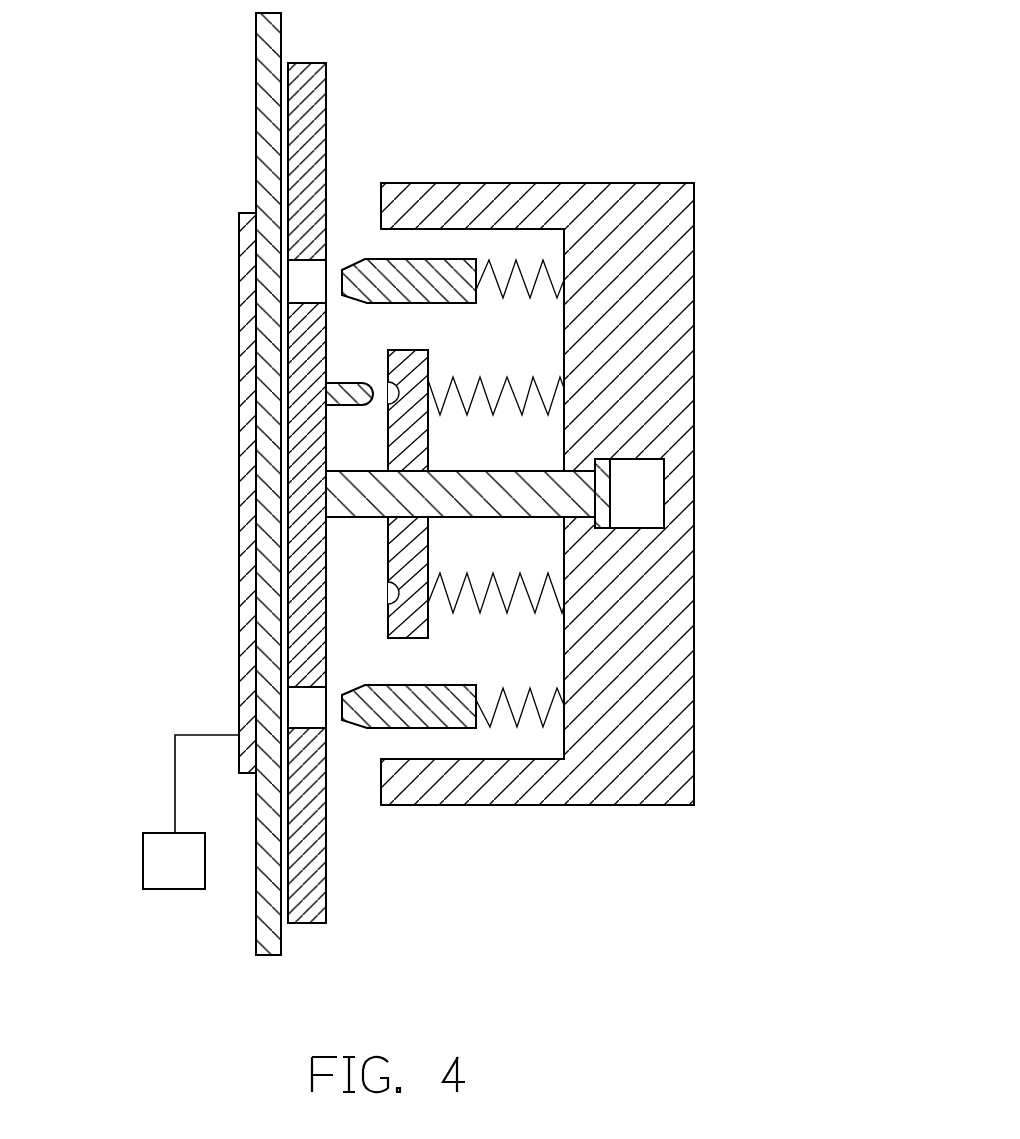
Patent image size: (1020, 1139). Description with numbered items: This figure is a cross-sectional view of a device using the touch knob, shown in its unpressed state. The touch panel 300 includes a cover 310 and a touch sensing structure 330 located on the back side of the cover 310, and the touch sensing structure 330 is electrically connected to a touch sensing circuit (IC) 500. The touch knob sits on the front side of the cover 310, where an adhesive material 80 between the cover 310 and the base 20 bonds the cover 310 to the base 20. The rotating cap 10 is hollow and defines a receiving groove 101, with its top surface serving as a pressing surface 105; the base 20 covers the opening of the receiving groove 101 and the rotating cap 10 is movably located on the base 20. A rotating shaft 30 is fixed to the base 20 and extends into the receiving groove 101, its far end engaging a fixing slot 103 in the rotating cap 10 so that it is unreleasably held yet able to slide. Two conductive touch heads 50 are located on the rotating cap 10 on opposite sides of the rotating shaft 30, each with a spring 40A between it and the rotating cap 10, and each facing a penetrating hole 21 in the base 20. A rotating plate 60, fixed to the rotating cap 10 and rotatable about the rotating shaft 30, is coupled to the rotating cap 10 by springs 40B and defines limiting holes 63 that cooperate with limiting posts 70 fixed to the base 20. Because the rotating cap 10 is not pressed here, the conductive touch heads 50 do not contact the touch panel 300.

The rotating cap 10 is at (610, 200).
The receiving groove 101 is at (505, 347).
The fixing slot 103 is at (642, 500).
The pressing surface 105 is at (694, 378).
The base 20 is at (320, 856).
The penetrating hole 21 is at (298, 712).
The rotating shaft 30 is at (517, 475).
The spring 40A is at (547, 717).
The spring 40B is at (543, 607).
The conductive touch head 50 is at (365, 262).
The rotating plate 60 is at (412, 532).
The limiting hole 63 is at (388, 400).
The limiting post 70 is at (348, 386).
The adhesive material 80 is at (292, 490).
The touch panel 300 is at (140, 47).
The cover 310 is at (268, 80).
The touch sensing structure 330 is at (243, 220).
The touch sensing circuit (IC) 500 is at (175, 890).